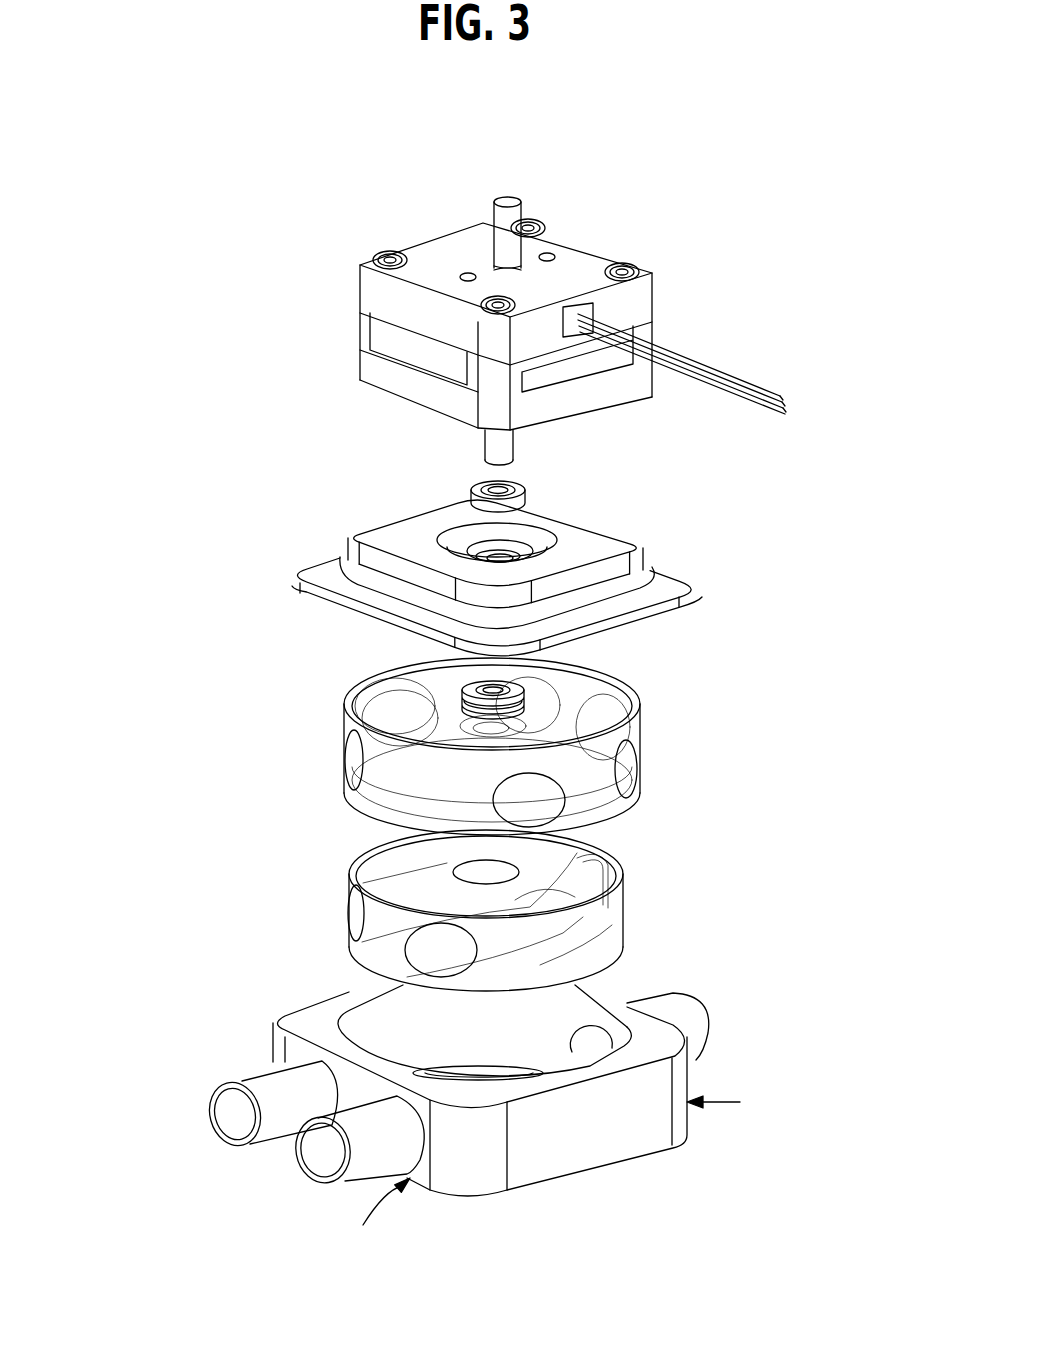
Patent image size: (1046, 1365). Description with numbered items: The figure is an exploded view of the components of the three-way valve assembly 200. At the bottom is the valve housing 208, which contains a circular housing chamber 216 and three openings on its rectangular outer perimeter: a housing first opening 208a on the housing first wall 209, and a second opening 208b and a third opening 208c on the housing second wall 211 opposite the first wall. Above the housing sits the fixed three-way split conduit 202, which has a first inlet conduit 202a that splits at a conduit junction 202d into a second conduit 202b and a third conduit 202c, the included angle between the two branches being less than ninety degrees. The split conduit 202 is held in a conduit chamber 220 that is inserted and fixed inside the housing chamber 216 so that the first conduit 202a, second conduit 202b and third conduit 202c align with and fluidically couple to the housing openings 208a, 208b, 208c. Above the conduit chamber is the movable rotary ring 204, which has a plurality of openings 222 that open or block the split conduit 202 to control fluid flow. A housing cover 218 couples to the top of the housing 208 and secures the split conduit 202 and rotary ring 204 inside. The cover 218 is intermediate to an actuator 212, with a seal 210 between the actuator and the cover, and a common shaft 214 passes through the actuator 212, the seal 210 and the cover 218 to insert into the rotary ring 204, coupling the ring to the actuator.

The three-way valve assembly 200 is at (253, 128).
The three-way split conduit 202 is at (413, 878).
The first inlet conduit 202a is at (592, 892).
The second conduit 202b is at (357, 905).
The third conduit 202c is at (432, 952).
The conduit junction 202d is at (517, 898).
The movable rotary ring 204 is at (633, 695).
The valve housing 208 is at (553, 1180).
The housing first opening 208a is at (657, 1013).
The second opening 208b is at (225, 1112).
The third opening 208c is at (342, 1158).
The housing first wall 209 is at (733, 1102).
The seal 210 is at (507, 500).
The housing second wall 211 is at (378, 1217).
The actuator 212 is at (648, 305).
The common shaft 214 is at (505, 225).
The housing chamber 216 is at (508, 1040).
The housing cover 218 is at (287, 558).
The conduit chamber 220 is at (608, 948).
The openings 222 is at (338, 733).